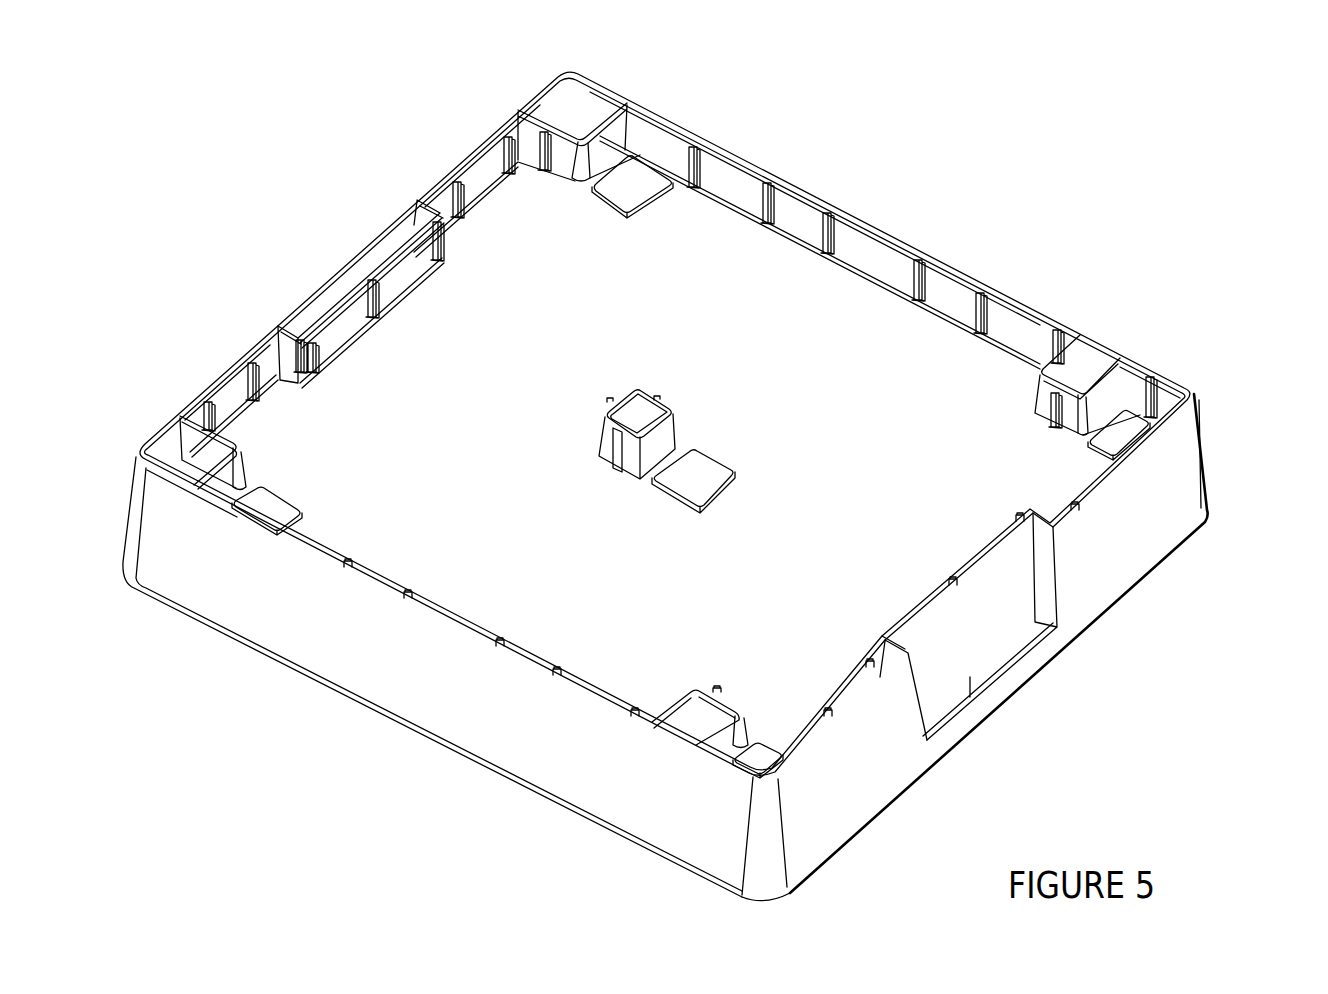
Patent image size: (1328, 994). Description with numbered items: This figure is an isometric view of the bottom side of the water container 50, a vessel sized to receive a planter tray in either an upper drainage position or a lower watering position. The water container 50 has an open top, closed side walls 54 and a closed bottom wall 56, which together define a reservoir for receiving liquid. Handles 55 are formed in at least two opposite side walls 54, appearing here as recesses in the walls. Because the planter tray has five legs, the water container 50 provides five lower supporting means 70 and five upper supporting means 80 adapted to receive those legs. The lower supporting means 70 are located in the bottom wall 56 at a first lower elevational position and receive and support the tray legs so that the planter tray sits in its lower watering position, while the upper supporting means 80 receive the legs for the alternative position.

The water container 50 is at (847, 213).
The side walls 54 is at (478, 138).
The handles 55 is at (397, 250).
The bottom wall 56 is at (1007, 458).
The lower supporting means 70 is at (566, 103).
The upper supporting means 80 is at (633, 180).